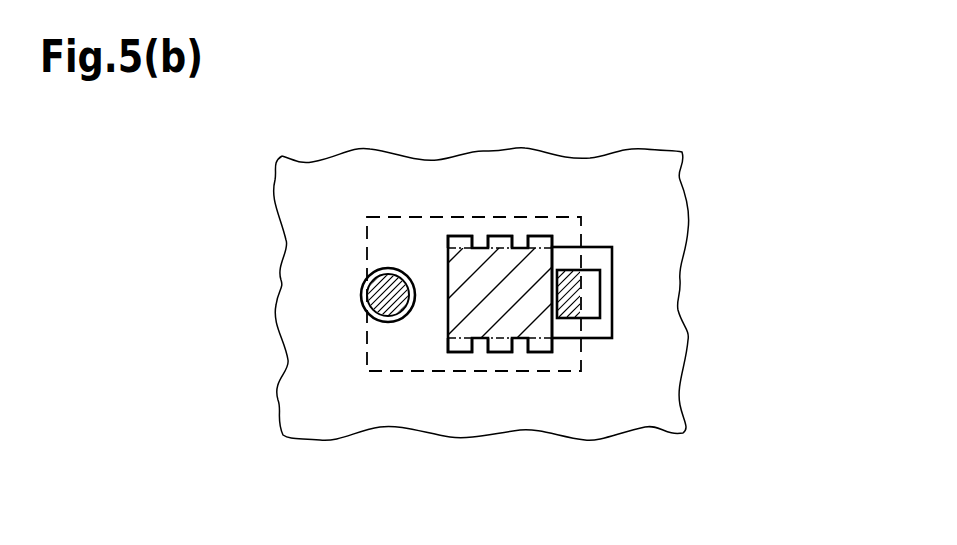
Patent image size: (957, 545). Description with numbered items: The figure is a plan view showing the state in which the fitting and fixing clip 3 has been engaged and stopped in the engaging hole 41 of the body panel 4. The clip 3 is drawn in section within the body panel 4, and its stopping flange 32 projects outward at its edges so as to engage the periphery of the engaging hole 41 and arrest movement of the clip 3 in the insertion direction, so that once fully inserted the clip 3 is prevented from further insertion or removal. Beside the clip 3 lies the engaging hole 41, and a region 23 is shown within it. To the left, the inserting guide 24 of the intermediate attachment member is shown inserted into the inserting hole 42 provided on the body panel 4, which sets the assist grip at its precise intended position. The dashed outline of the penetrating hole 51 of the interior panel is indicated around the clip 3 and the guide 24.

The fitting and fixing clip 3 is at (520, 277).
The body panel 4 is at (618, 195).
The conductor pattern 23 is at (568, 297).
The inserting guide 24 is at (385, 295).
The stopping flange 32 is at (463, 236).
The engaging hole 41 is at (590, 258).
The inserting hole 42 is at (387, 323).
The penetrating hole 51 is at (418, 250).